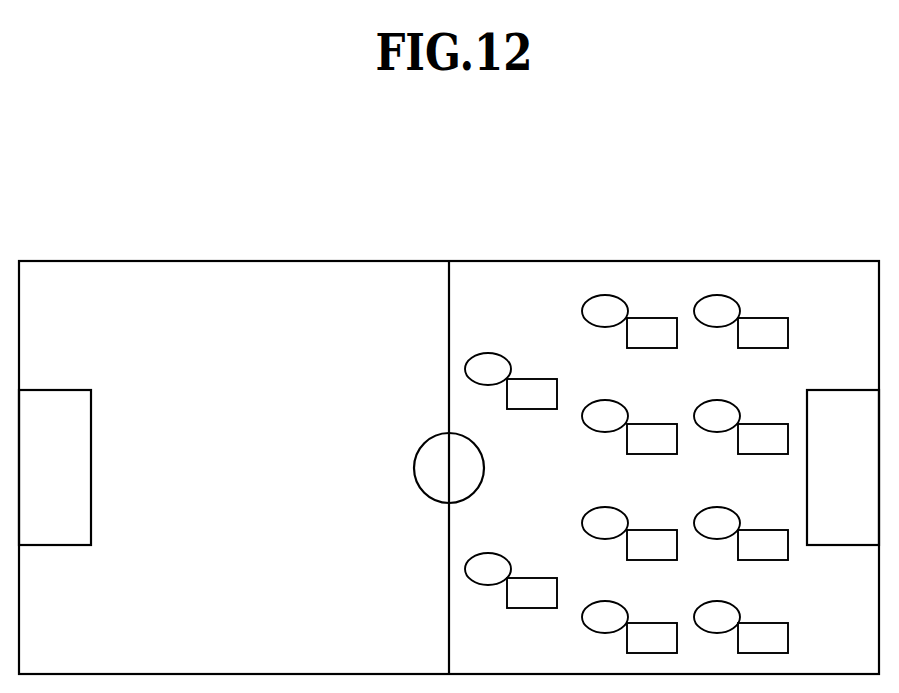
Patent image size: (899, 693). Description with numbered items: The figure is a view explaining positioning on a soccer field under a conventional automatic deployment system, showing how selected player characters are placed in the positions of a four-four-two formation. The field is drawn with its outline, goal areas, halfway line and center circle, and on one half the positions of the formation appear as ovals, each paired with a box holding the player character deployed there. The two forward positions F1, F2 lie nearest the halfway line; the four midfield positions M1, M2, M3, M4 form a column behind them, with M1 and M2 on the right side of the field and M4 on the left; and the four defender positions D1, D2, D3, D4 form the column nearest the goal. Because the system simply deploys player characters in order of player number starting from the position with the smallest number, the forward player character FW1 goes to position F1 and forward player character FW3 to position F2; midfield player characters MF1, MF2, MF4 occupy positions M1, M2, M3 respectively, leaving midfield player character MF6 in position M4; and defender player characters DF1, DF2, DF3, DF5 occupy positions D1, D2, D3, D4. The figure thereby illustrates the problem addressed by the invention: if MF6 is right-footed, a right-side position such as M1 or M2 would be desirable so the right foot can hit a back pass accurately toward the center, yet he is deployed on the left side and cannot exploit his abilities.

The FW position F1 is at (488, 369).
The FW player character FW1 is at (532, 394).
The FW position F2 is at (488, 569).
The FW player character FW3 is at (532, 593).
The MF position M1 is at (605, 311).
The MF player character MF1 is at (652, 333).
The MF position M2 is at (605, 416).
The MF player character MF2 is at (652, 439).
The MF position M3 is at (605, 523).
The MF player character MF4 is at (652, 545).
The MF position M4 is at (605, 617).
The MF player character MF6 is at (652, 638).
The DF position D1 is at (717, 311).
The DF player character DF1 is at (763, 333).
The DF position D2 is at (717, 416).
The DF player character DF2 is at (763, 439).
The DF position D3 is at (717, 523).
The DF player character DF3 is at (763, 545).
The DF position D4 is at (717, 617).
The DF player character DF5 is at (763, 638).